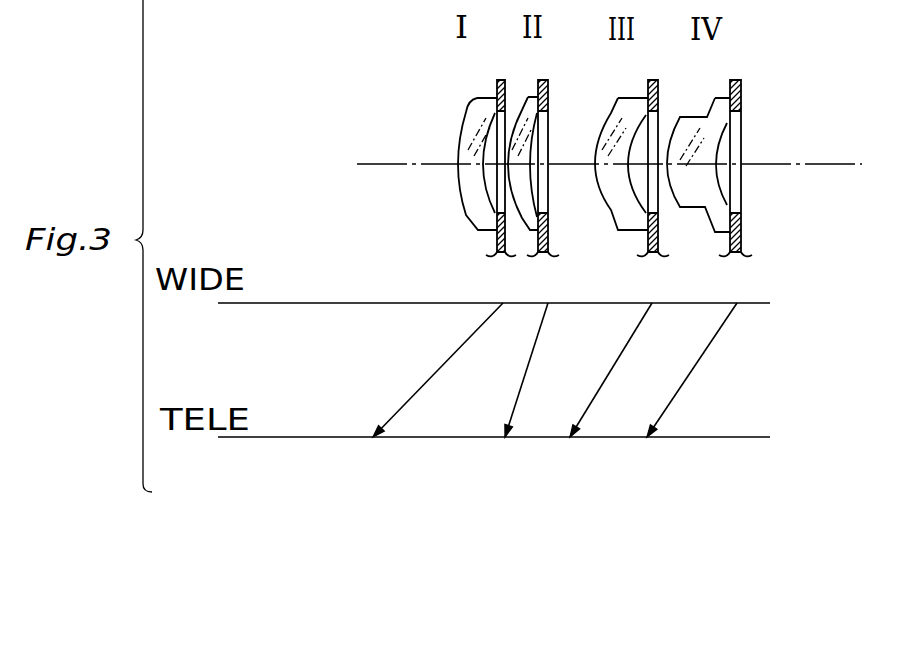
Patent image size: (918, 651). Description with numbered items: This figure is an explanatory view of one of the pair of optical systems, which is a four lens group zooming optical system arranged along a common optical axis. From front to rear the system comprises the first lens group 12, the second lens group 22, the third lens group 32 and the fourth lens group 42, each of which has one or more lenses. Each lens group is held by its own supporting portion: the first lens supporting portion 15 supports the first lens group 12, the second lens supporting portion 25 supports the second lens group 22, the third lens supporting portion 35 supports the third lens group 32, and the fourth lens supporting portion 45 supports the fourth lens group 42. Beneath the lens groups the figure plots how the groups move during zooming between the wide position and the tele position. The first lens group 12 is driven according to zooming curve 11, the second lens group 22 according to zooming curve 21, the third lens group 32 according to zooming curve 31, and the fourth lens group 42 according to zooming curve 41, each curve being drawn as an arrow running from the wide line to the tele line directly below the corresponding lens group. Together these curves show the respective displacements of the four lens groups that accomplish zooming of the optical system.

The zooming curve 11 is at (447, 360).
The first lens group 12 is at (466, 111).
The first lens supporting portion 15 is at (497, 82).
The zooming curve 21 is at (524, 378).
The second lens group 22 is at (522, 110).
The second lens supporting portion 25 is at (549, 87).
The zooming curve 31 is at (618, 358).
The third lens group 32 is at (613, 112).
The third lens supporting portion 35 is at (658, 84).
The zooming curve 41 is at (704, 352).
The fourth lens group 42 is at (693, 117).
The fourth lens supporting portion 45 is at (742, 87).